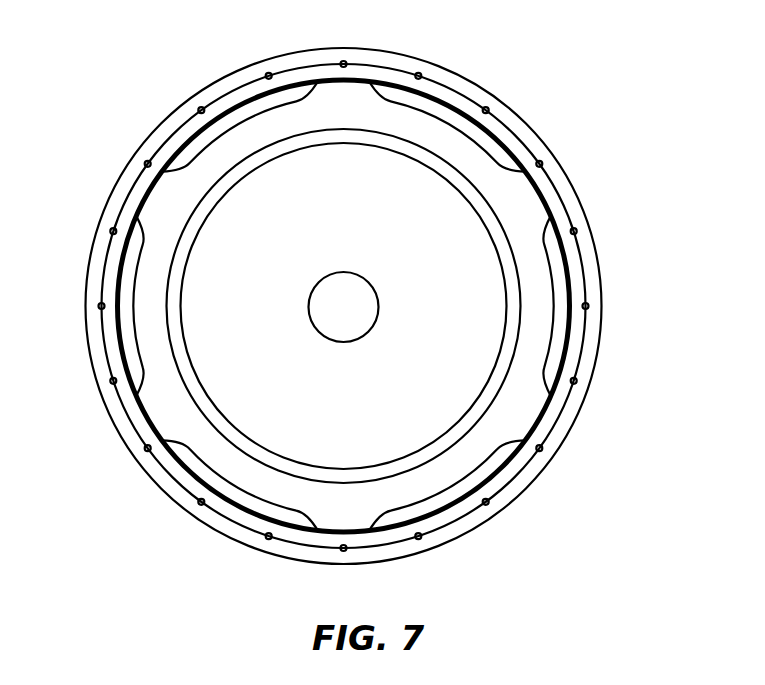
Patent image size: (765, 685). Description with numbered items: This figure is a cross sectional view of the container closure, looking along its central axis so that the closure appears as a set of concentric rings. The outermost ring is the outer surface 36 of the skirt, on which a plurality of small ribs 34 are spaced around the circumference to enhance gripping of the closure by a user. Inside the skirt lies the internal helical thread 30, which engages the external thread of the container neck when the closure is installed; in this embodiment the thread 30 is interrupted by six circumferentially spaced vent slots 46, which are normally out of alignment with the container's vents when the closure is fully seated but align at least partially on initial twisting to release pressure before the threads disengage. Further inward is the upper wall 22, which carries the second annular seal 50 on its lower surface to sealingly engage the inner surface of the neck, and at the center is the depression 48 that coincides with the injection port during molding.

The upper wall 22 is at (425, 217).
The internal helical thread 30 is at (339, 311).
The ribs 34 is at (342, 306).
The outer surface 36 is at (344, 306).
The vent slots 46 is at (341, 308).
The depression 48 is at (376, 299).
The second annular seal 50 is at (344, 306).